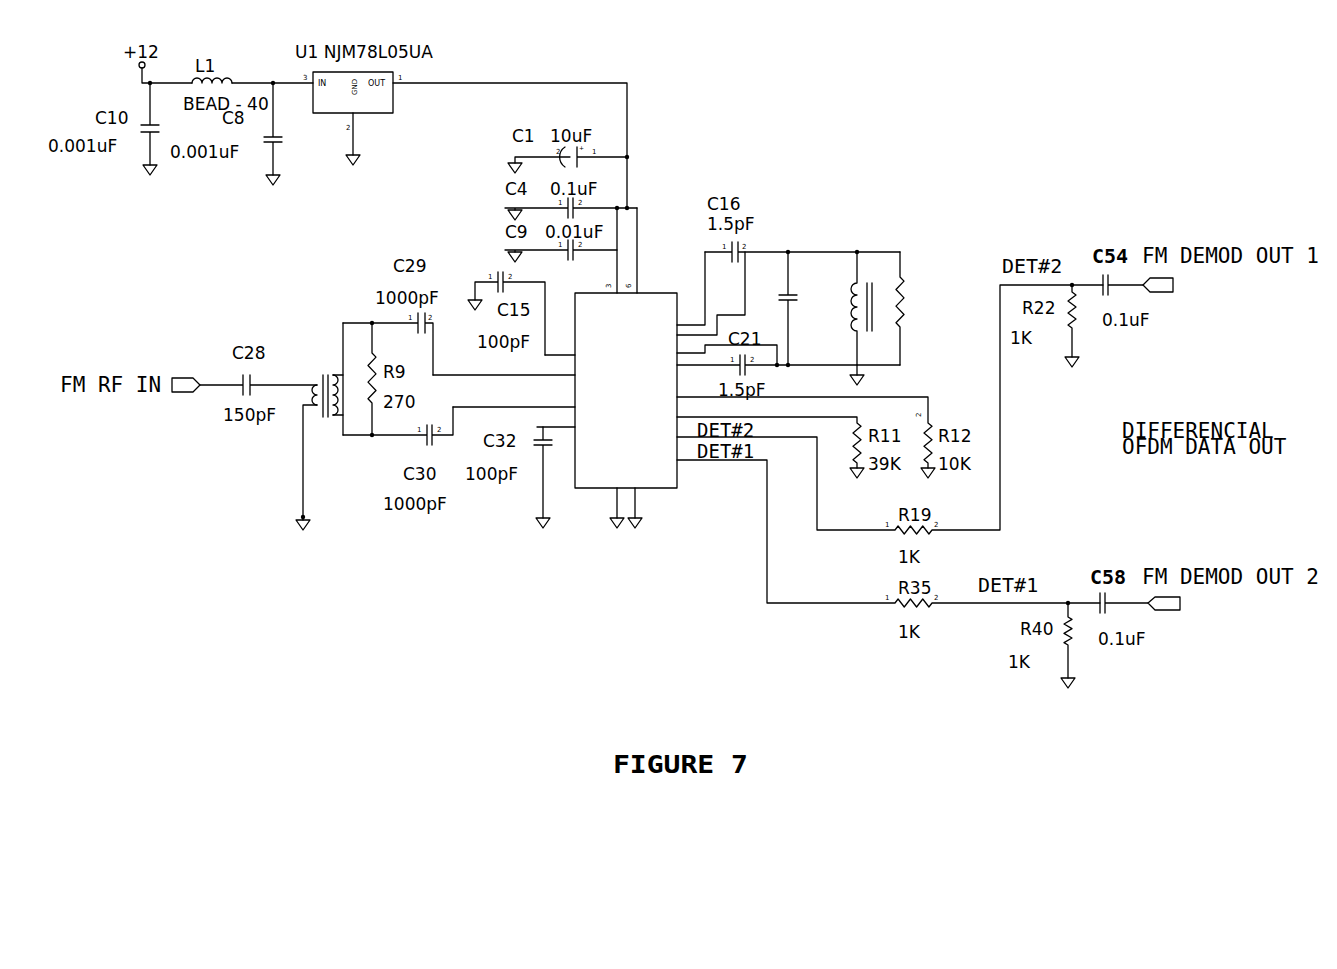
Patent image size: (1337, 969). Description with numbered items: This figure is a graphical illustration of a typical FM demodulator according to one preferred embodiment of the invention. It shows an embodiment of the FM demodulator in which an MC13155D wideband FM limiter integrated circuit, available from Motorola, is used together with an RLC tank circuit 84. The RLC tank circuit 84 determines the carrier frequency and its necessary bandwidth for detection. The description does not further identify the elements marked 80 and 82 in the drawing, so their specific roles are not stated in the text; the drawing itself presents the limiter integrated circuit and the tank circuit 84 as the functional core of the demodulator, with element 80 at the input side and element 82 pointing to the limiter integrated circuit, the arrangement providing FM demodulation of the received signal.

The input RF transformer T1 80 is at (323, 442).
The FM demodulator IC U2 (MC13155D) 82 is at (667, 237).
The RLC tank circuit 84 is at (913, 242).